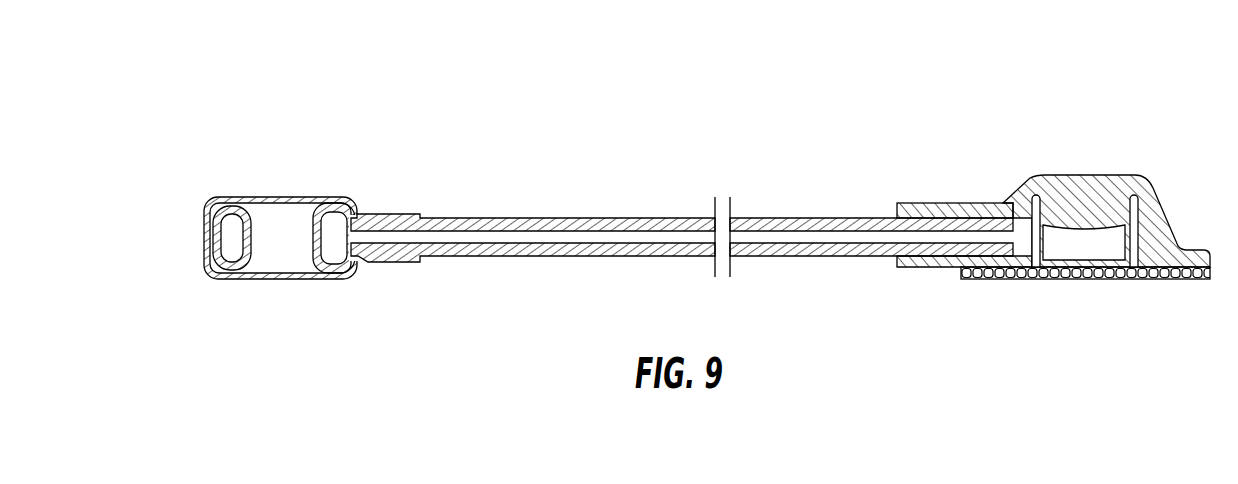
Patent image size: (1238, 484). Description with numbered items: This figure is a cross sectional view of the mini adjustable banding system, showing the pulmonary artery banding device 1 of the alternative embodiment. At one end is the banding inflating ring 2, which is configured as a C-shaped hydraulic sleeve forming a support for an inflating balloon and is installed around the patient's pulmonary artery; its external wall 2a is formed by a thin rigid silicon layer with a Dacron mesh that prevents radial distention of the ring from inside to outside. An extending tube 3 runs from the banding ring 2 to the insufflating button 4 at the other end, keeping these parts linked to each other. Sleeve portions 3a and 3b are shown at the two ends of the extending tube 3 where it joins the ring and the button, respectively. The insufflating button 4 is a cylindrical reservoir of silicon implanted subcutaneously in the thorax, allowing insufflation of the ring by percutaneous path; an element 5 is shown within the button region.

The pulmonary artery banding device 1 is at (757, 121).
The banding inflating ring 2 is at (306, 184).
The external wall 2a is at (204, 252).
The extending tube 3 is at (546, 257).
The first sleeve 3a is at (386, 262).
The second sleeve 3b is at (922, 268).
The insufflating button 4 is at (1057, 166).
The retaining clip 5 is at (1134, 267).